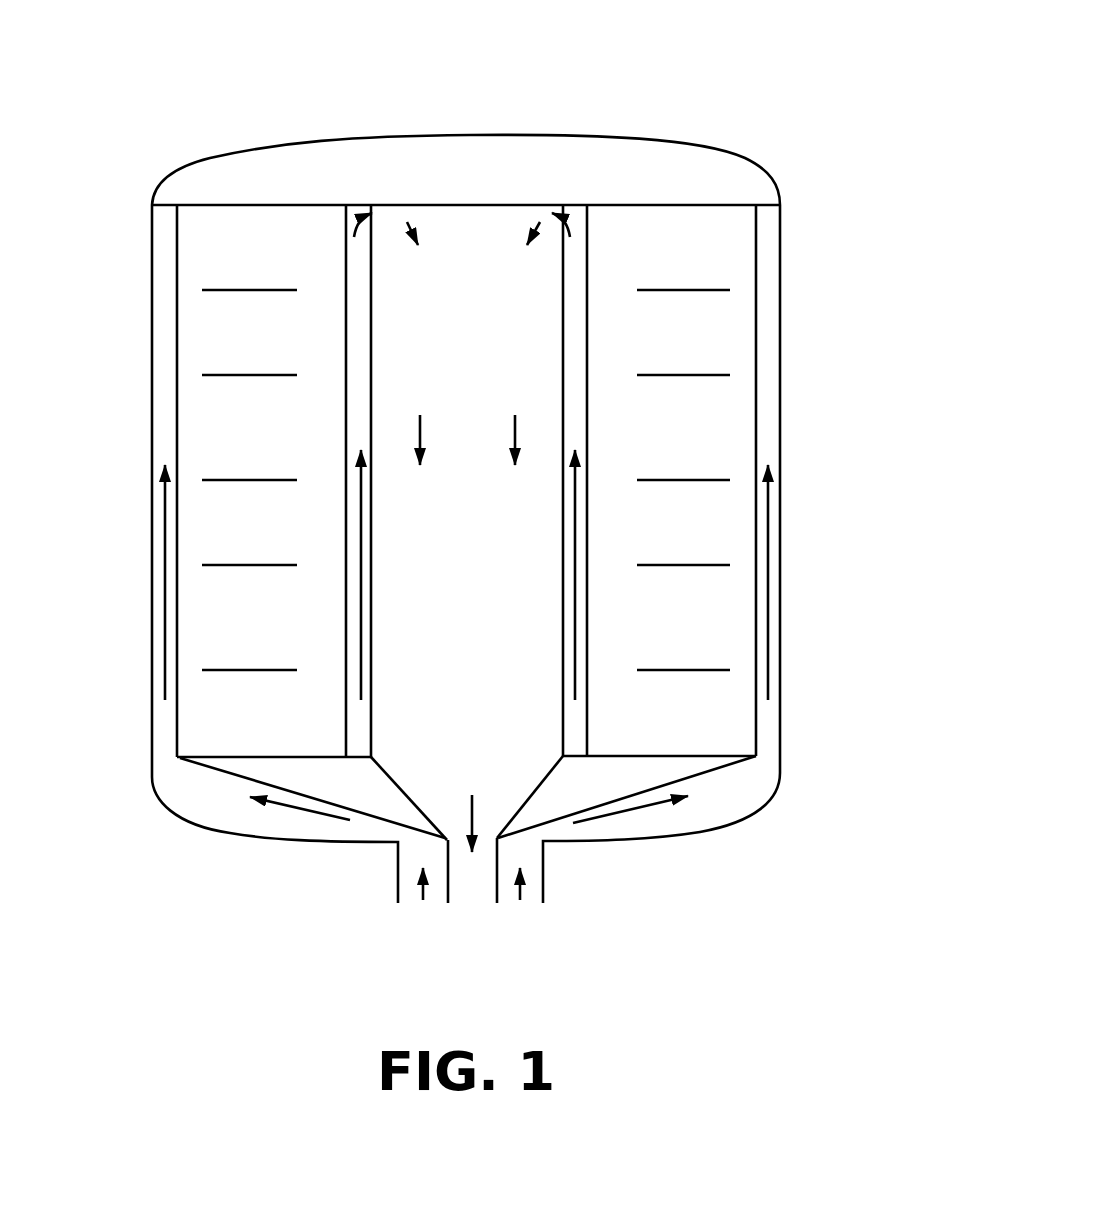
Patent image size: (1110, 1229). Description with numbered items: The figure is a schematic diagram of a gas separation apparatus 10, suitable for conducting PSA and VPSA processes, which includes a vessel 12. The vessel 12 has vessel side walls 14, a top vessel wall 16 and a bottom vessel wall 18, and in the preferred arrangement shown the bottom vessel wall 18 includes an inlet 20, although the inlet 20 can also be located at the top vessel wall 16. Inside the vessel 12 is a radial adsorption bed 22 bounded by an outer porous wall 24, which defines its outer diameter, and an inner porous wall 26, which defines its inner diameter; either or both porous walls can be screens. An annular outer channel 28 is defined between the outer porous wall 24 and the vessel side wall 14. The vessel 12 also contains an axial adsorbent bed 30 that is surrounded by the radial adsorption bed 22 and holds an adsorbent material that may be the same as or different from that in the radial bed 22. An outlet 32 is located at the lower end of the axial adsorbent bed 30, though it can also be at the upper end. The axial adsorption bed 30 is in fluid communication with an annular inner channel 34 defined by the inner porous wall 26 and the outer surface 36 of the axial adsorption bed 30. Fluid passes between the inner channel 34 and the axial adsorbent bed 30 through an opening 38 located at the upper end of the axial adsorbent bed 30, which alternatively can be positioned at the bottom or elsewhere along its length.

The gas separation apparatus 10 is at (725, 75).
The vessel 12 is at (783, 382).
The vessel side walls 14 is at (781, 312).
The top vessel wall 16 is at (443, 135).
The bottom vessel wall 18 is at (687, 830).
The inlet 20 is at (537, 887).
The radial adsorption bed 22 is at (172, 412).
The outer porous wall 24 is at (177, 725).
The inner porous wall 26 is at (348, 557).
The outer channel 28 is at (160, 285).
The axial adsorbent bed 30 is at (570, 288).
The outlet 32 is at (468, 890).
The inner channel 34 is at (358, 283).
The outer surface 36 is at (565, 413).
The opening 38 is at (578, 237).